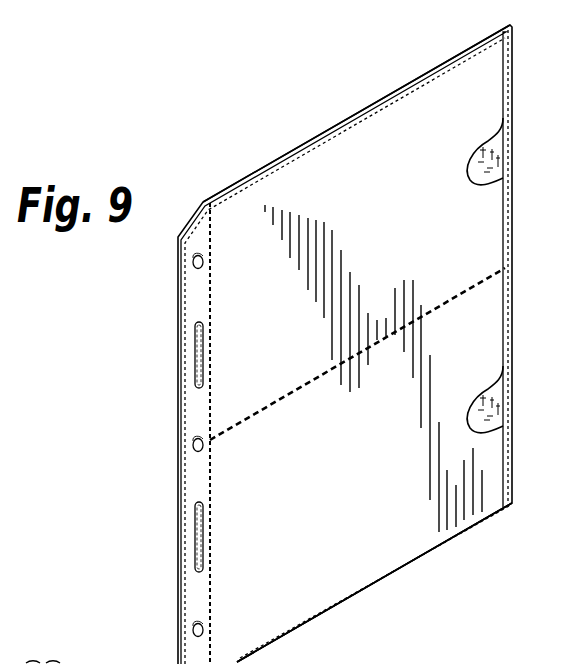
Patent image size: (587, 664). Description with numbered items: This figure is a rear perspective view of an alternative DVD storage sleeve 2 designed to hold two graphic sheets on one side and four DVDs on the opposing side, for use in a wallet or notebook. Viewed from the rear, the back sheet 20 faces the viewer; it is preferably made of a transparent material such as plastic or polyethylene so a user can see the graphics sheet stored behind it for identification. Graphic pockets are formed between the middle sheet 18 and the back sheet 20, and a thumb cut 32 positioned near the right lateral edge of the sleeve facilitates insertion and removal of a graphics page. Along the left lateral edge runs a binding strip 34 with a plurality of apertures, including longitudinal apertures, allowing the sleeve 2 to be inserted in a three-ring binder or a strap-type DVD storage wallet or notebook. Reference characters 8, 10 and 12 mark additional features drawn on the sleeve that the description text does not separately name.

The DVD sleeve 2 is at (152, 289).
The upper tab 8 is at (505, 159).
The binding edge strip 10 is at (178, 394).
The sheet edge 12 is at (318, 130).
The middle sheet 18 is at (490, 392).
The back sheet 20 is at (403, 548).
The thumb cut 32 is at (488, 192).
The binding strip 34 is at (194, 479).